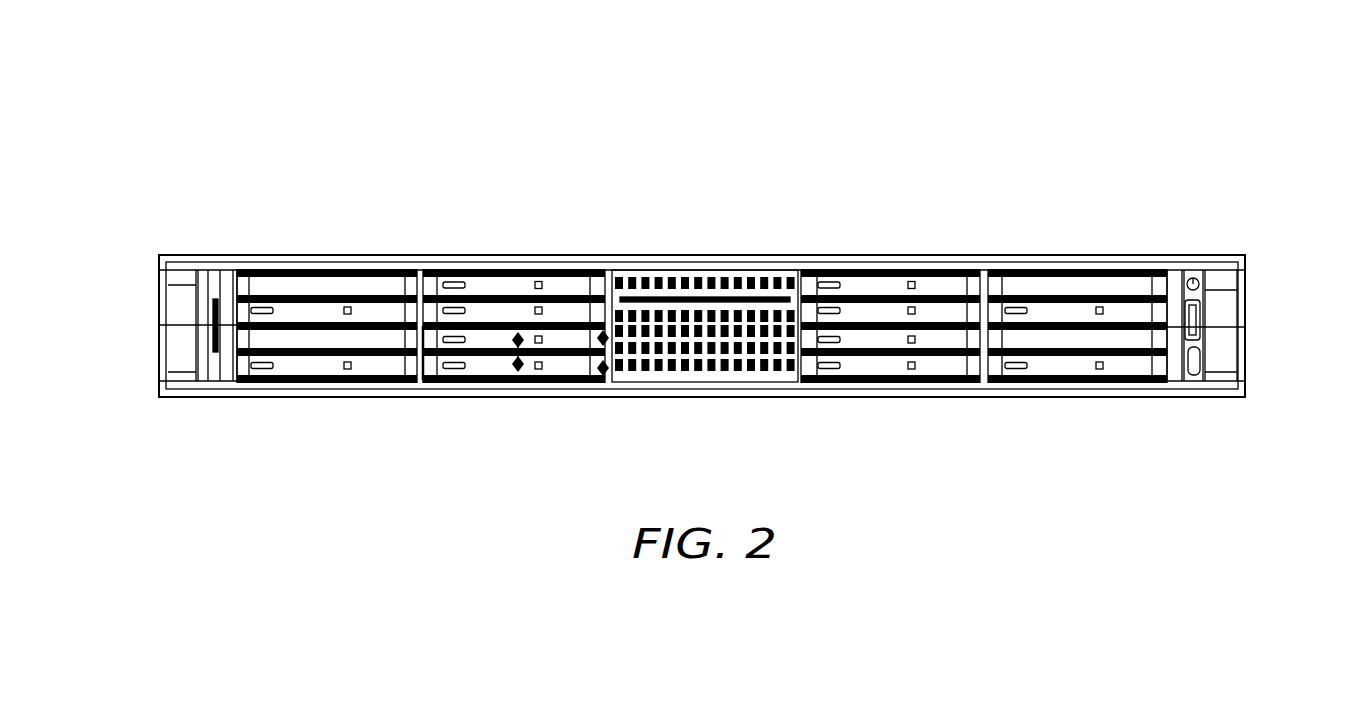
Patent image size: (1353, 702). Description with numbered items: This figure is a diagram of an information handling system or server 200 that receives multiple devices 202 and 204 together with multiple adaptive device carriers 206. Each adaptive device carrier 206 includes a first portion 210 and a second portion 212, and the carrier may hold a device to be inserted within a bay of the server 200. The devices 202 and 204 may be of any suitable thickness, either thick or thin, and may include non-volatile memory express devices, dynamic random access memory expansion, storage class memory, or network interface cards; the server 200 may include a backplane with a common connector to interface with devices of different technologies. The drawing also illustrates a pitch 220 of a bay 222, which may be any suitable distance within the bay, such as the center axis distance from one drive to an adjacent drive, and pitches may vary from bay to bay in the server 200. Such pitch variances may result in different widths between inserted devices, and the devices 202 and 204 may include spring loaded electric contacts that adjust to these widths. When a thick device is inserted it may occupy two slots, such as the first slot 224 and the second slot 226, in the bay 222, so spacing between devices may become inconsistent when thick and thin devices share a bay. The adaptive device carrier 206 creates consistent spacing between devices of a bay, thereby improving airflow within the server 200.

The information handling system or server 200 is at (1016, 105).
The device 202 is at (513, 312).
The device 204 is at (433, 282).
The adaptive device carrier 206 is at (162, 381).
The first portion 210 is at (292, 310).
The second portion 212 is at (350, 288).
The pitch 220 is at (518, 364).
The bay 222 is at (425, 379).
The first slot 224 is at (603, 338).
The second slot 226 is at (603, 368).